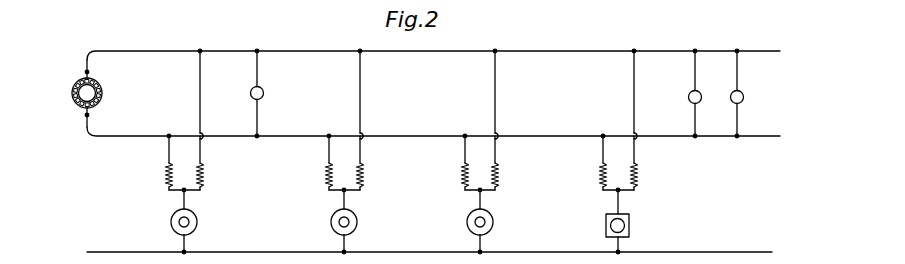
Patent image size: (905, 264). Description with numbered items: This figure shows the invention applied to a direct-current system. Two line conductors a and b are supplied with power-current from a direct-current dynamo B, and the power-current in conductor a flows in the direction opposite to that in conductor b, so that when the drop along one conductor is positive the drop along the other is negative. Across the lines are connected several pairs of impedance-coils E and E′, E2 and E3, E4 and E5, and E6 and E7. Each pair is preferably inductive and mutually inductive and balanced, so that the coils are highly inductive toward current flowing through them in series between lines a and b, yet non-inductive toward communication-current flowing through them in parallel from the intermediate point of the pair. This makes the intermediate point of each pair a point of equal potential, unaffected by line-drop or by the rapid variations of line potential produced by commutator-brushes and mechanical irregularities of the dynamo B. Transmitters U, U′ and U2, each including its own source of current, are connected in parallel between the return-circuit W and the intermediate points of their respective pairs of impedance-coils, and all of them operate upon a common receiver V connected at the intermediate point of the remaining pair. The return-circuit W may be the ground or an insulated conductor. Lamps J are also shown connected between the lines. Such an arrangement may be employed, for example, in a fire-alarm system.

The line conductor a is at (433, 46).
The line conductor b is at (433, 127).
The return-circuit W is at (429, 243).
The direct-current dynamo B is at (76, 93).
The indicating device (lamp) J is at (501, 93).
The impedance-coil E is at (161, 162).
The impedance-coil E′ is at (208, 163).
The impedance-coil E2 is at (320, 162).
The impedance-coil E3 is at (369, 163).
The impedance-coil E4 is at (456, 162).
The impedance-coil E5 is at (504, 163).
The impedance-coil E6 is at (594, 162).
The impedance-coil E7 is at (644, 163).
The transmitter U is at (190, 222).
The transmitter U′ is at (352, 222).
The transmitter U2 is at (489, 222).
The common receiver V is at (626, 222).